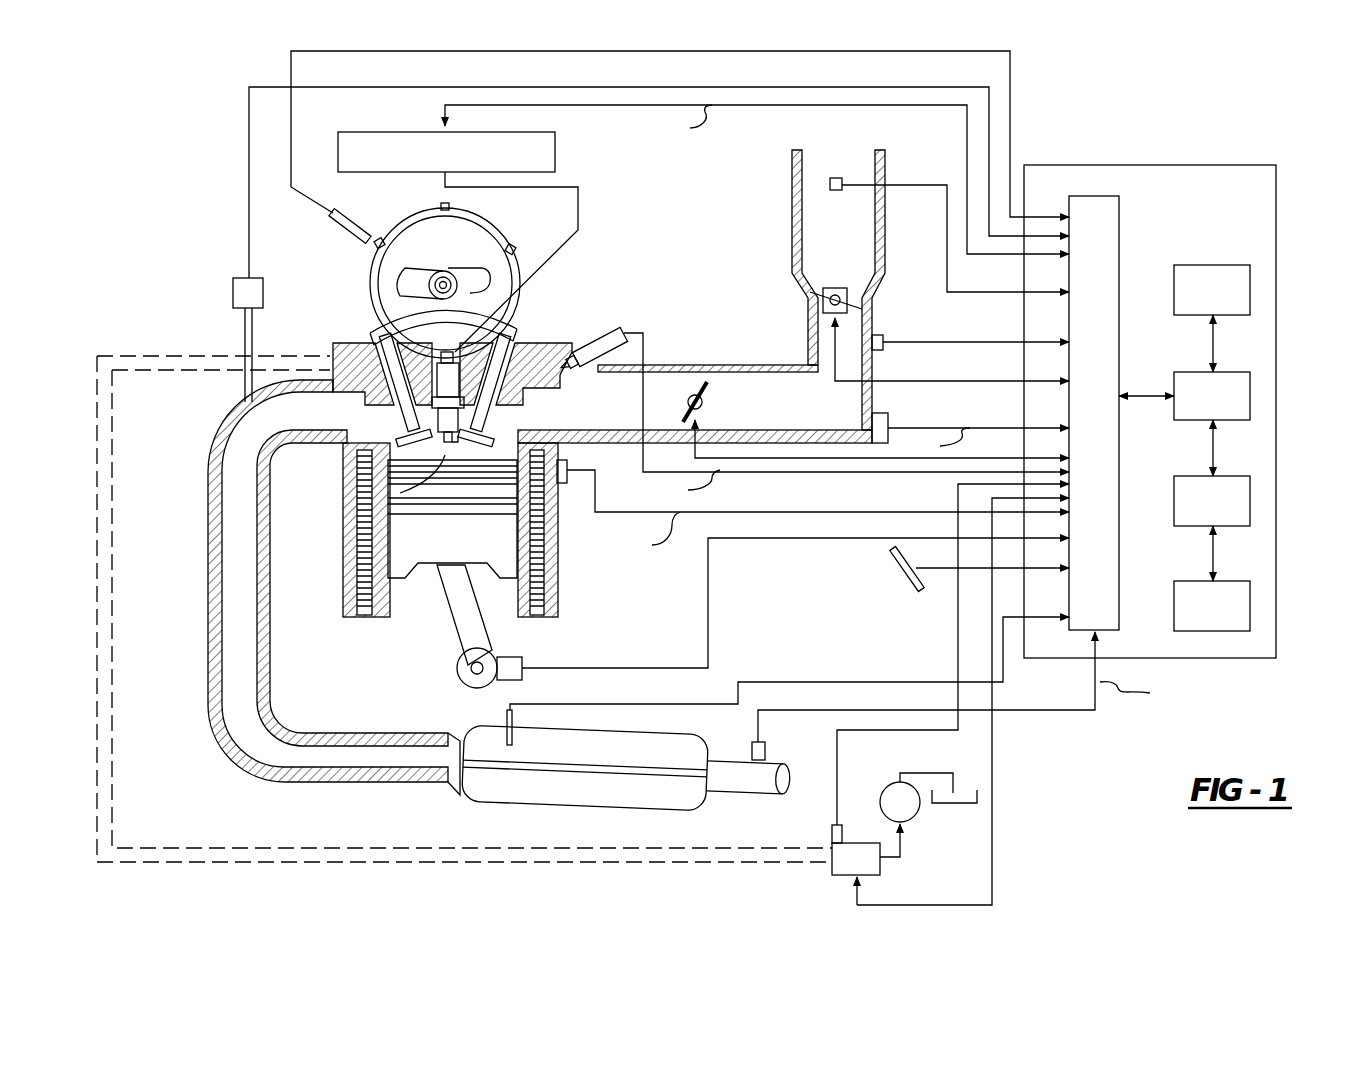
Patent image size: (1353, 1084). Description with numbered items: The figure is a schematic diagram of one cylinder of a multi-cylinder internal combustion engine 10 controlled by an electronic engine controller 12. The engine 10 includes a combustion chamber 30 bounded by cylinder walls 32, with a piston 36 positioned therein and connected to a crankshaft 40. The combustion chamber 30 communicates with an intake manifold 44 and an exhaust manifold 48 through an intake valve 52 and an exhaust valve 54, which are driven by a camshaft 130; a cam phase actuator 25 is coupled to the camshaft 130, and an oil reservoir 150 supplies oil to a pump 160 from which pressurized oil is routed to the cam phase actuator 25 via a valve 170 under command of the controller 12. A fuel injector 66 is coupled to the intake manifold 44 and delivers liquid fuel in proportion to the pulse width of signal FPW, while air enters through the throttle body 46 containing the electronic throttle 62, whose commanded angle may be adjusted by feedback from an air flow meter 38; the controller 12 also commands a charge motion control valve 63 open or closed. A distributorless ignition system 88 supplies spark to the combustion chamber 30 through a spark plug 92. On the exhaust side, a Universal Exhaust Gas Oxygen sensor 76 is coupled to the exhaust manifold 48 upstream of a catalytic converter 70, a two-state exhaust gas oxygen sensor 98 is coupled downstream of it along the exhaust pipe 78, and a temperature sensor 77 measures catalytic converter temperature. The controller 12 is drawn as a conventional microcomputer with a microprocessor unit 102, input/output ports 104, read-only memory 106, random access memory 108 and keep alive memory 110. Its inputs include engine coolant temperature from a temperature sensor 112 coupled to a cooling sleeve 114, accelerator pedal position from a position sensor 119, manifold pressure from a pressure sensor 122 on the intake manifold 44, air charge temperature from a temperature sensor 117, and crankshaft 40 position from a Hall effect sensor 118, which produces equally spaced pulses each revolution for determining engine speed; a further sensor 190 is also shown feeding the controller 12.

The internal combustion engine 10 is at (331, 340).
The electronic engine controller 12 is at (1105, 165).
The cam phase actuator 25 is at (494, 242).
The combustion chamber 30 is at (383, 484).
The cylinder walls 32 is at (398, 605).
The piston 36 is at (432, 556).
The air flow meter 38 is at (836, 178).
The crankshaft 40 is at (458, 668).
The intake manifold 44 is at (789, 411).
The throttle body 46 is at (850, 241).
The exhaust manifold 48 is at (240, 528).
The intake valve 52 is at (497, 420).
The exhaust valve 54 is at (403, 427).
The electronic throttle 62 is at (820, 285).
The charge motion control valve 63 is at (695, 395).
The fuel injector 66 is at (600, 335).
The catalytic converter 70 is at (548, 808).
The Universal Exhaust Gas Oxygen sensor 76 is at (233, 292).
The temperature sensor 77 is at (505, 712).
The exhaust pipe 78 is at (722, 795).
The distributorless ignition system 88 is at (555, 150).
The spark plug 92 is at (405, 312).
The two-state exhaust gas oxygen sensor 98 is at (767, 743).
The microprocessor unit 102 is at (1174, 372).
The input/output ports 104 is at (1119, 232).
The read-only memory 106 is at (1212, 265).
The random access memory 108 is at (1174, 476).
The keep alive memory 110 is at (1174, 581).
The temperature sensor 112 is at (568, 472).
The cooling sleeve 114 is at (360, 612).
The temperature sensor 117 is at (883, 340).
The Hall effect sensor 118 is at (522, 672).
The position sensor 119 is at (897, 578).
The pressure sensor 122 is at (890, 422).
The camshaft 130 is at (400, 280).
The oil reservoir 150 is at (362, 220).
The pump 160 is at (906, 820).
The valve 170 is at (832, 858).
The fuel tank sensor 190 is at (837, 825).